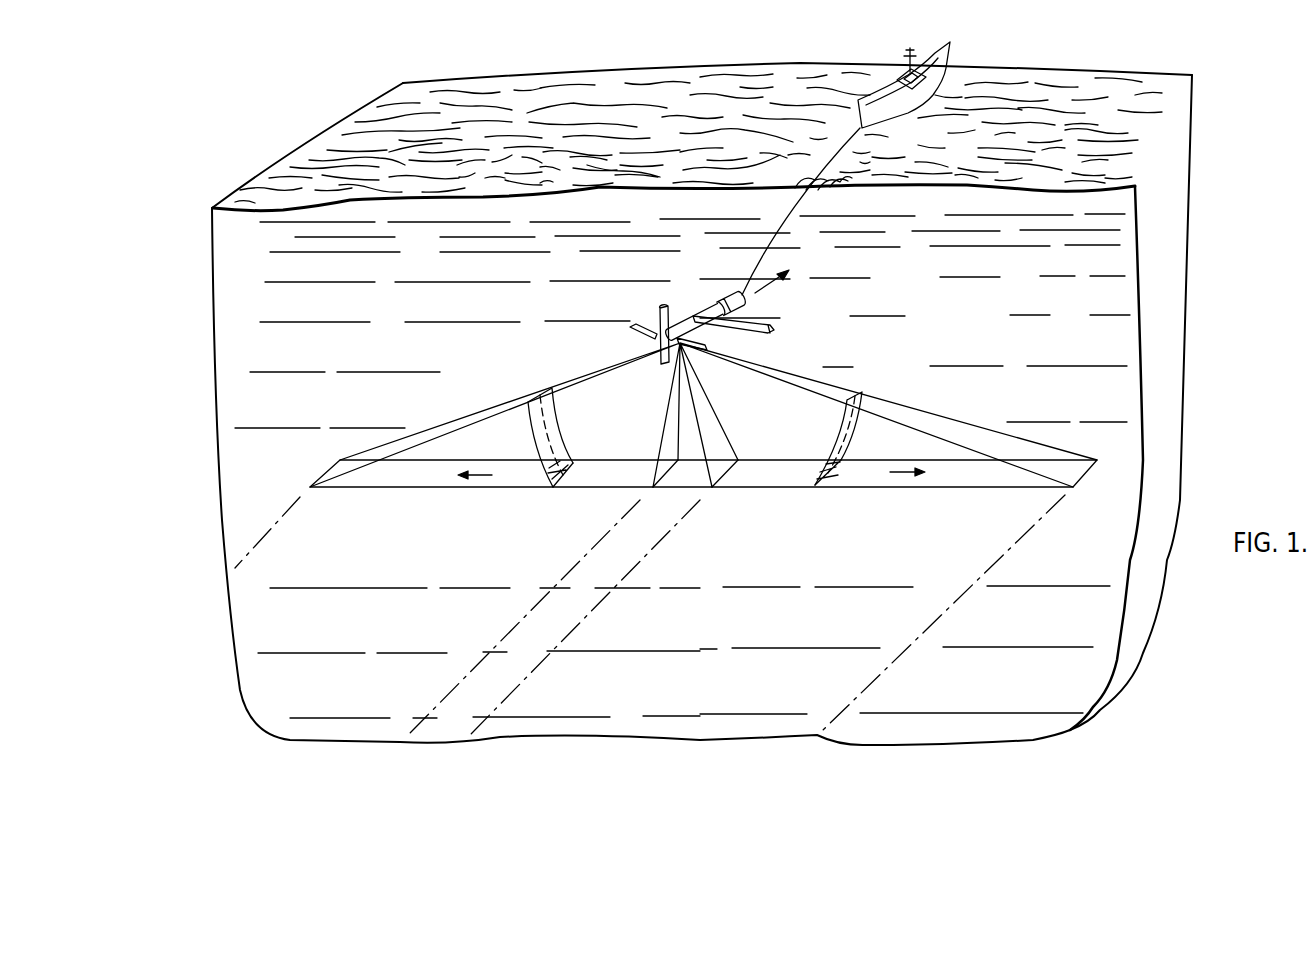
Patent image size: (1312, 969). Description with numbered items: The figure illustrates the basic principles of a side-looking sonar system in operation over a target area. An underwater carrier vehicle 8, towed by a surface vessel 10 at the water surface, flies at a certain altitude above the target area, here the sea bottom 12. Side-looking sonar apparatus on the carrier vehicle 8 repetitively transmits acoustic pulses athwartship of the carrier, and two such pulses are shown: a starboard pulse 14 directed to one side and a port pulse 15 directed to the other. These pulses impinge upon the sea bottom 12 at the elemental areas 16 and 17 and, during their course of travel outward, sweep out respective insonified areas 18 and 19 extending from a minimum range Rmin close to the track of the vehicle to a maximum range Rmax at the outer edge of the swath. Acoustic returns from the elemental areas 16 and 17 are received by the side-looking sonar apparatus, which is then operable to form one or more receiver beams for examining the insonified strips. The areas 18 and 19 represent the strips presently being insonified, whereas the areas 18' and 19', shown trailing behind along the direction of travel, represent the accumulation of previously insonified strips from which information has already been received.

The underwater carrier vehicle 8 is at (760, 321).
The surface vessel 10 is at (955, 51).
The sea bottom 12 is at (720, 562).
The starboard pulse 14 is at (861, 390).
The port pulse 15 is at (542, 389).
The elemental area 16 is at (823, 489).
The elemental area 17 is at (544, 490).
The insonified area 18 is at (904, 491).
The insonified area 19 is at (494, 492).
The accumulation of previously insonified strips 18' is at (944, 612).
The accumulation of previously insonified strips 19' is at (271, 535).
The maximum range Rmax is at (704, 504).
The minimum range Rmin is at (646, 507).